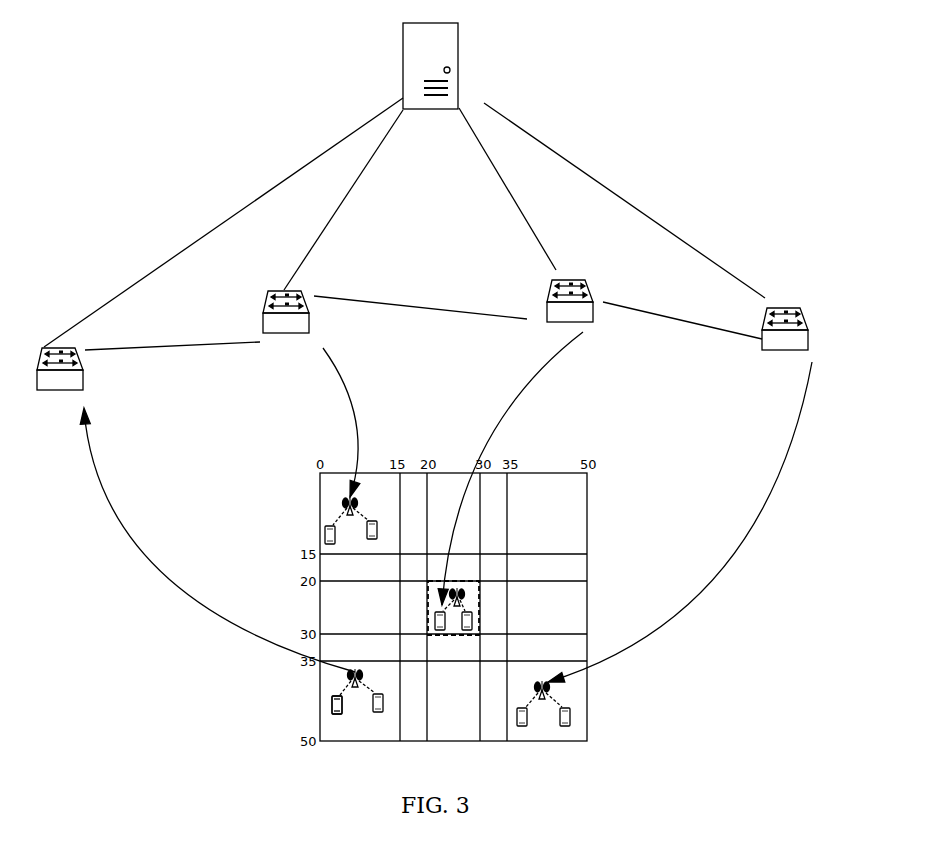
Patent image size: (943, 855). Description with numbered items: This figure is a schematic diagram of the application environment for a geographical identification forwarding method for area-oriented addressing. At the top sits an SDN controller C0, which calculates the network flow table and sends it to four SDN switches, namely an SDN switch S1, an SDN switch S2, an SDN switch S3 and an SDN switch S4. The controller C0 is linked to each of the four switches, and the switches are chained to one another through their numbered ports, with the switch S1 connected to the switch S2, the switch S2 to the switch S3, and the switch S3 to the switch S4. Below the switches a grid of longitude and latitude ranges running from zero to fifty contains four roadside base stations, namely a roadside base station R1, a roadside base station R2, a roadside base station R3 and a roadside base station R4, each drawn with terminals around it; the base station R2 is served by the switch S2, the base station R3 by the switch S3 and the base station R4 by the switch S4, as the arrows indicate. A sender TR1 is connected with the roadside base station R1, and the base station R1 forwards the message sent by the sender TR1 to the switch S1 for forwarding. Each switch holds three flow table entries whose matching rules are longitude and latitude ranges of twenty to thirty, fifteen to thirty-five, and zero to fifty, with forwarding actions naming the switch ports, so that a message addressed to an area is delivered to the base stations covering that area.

The SDN controller C0 is at (399, 77).
The SDN switch S1 is at (87, 378).
The SDN switch S2 is at (273, 332).
The SDN switch S3 is at (598, 308).
The SDN switch S4 is at (790, 358).
The roadside base station R1 is at (357, 670).
The roadside base station R2 is at (358, 501).
The roadside base station R3 is at (458, 588).
The roadside base station R4 is at (541, 681).
The sender TR1 is at (345, 713).